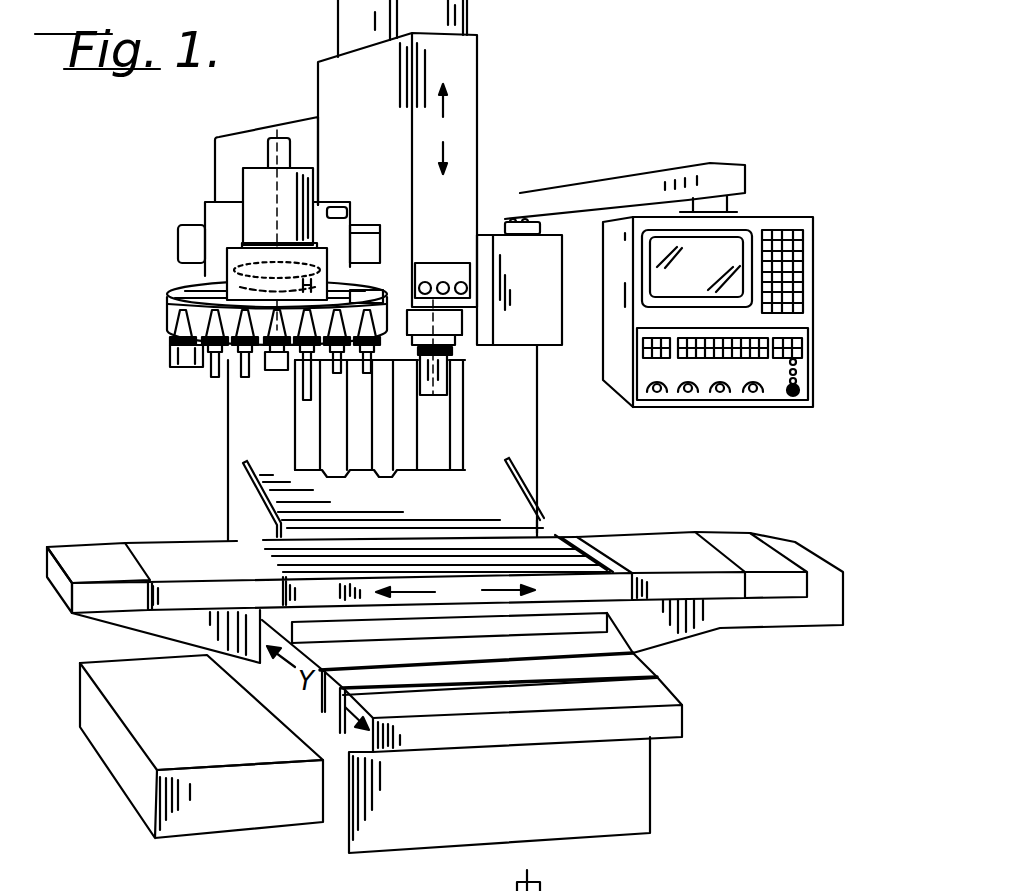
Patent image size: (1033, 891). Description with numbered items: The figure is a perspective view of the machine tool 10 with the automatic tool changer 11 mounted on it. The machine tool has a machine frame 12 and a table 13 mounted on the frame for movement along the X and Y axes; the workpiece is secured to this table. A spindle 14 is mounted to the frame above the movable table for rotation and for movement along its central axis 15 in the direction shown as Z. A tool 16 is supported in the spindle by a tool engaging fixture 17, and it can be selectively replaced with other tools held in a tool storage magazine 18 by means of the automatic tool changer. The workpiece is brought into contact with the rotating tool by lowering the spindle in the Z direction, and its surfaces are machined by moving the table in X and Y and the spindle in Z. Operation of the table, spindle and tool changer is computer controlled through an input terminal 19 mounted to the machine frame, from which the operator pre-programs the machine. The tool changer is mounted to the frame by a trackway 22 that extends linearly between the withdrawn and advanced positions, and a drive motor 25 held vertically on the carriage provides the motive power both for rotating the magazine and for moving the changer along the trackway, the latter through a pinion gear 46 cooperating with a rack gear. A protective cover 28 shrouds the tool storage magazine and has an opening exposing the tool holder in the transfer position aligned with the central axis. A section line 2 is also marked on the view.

The section line 2- 2 is at (200, 247).
The machine tool 10 is at (565, 103).
The automatic tool changer 11 is at (193, 182).
The machine frame 12 is at (310, 421).
The table 13 is at (553, 540).
The spindle 14 is at (457, 337).
The central axis 15 is at (430, 240).
The tool 16 is at (448, 385).
The tool engaging fixture 17 is at (452, 355).
The tool storage magazine 18 is at (158, 321).
The input terminal 19 is at (797, 322).
The trackway 22 is at (187, 222).
The drive motor 25 is at (252, 183).
The protective cover 28 is at (166, 291).
The pinion gear 46 is at (225, 288).